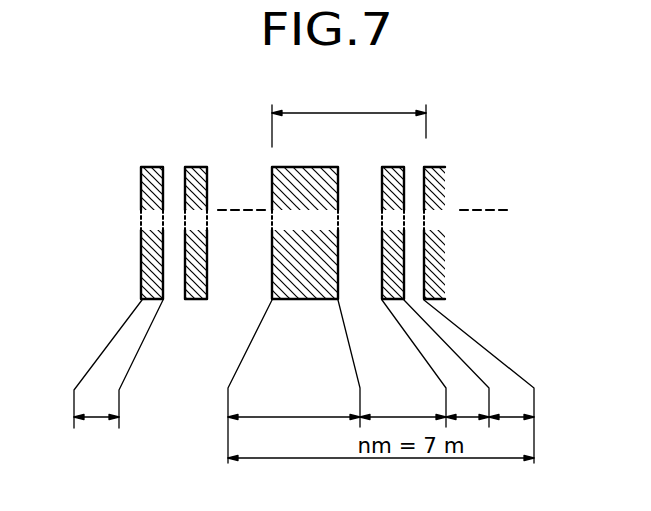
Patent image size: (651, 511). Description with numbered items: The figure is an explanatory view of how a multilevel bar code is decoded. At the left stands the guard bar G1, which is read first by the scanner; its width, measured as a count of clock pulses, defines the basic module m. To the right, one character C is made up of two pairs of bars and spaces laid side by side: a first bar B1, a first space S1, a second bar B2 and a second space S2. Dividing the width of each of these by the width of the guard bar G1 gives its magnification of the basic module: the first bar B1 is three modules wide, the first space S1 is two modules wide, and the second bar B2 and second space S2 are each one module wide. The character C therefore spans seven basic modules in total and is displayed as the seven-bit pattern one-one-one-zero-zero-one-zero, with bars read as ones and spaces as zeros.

The guard bar G1 is at (153, 160).
The first bar B1 is at (299, 177).
The first space S1 is at (355, 180).
The second bar B2 is at (394, 171).
The second space S2 is at (413, 172).
The character C is at (386, 113).